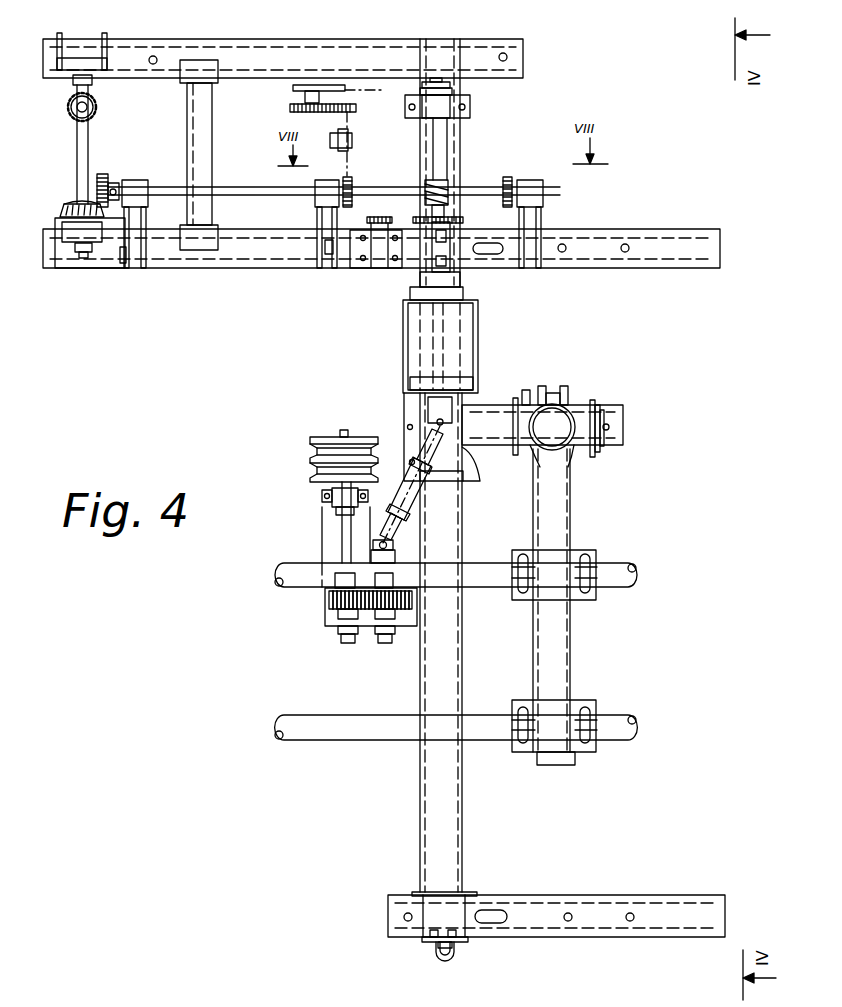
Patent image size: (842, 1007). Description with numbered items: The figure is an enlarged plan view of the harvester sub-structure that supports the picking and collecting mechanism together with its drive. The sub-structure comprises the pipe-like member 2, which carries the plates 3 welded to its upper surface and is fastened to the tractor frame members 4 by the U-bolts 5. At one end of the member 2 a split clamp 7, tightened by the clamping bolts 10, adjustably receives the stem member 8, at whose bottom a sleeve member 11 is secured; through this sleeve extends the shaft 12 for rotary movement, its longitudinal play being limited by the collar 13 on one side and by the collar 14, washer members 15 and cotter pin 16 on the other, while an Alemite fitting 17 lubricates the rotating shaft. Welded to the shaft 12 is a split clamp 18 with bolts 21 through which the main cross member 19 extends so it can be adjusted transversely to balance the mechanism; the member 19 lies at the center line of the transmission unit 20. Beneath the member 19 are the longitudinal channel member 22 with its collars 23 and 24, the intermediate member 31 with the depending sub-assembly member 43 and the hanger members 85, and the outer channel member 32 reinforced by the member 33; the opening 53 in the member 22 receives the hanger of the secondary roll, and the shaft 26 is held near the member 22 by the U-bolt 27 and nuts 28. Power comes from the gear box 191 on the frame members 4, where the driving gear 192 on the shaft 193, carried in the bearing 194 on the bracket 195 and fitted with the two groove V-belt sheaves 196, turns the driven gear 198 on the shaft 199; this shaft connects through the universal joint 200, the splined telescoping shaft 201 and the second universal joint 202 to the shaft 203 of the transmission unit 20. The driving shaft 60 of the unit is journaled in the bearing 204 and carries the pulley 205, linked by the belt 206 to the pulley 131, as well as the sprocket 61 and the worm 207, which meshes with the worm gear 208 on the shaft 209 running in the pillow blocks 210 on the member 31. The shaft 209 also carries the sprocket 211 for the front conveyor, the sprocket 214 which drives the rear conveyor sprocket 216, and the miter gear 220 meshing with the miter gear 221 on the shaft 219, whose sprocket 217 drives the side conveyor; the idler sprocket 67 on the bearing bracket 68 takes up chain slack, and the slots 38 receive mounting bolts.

The member 2 is at (535, 649).
The plates 3 is at (514, 551).
The tractor frame members 4 is at (627, 584).
The U-bolts 5 is at (598, 732).
The split clamp 7 is at (575, 398).
The stem member 8 is at (567, 447).
The clamping bolts 10 is at (570, 393).
The sleeve member 11 is at (597, 401).
The shaft 12 is at (471, 411).
The collar 13 is at (512, 457).
The collar 14 is at (588, 455).
The washer members 15 is at (600, 460).
The cotter pin 16 is at (620, 430).
The Alemite fitting 17 is at (522, 390).
The split clamp 18 is at (463, 468).
The main cross member 19 is at (463, 516).
The transmission unit 20 is at (407, 332).
The bolts 21 is at (406, 426).
The member 22 is at (550, 930).
The collar 23 is at (463, 944).
The collar 24 is at (470, 896).
The shaft 26 is at (444, 962).
The U-bolt 27 is at (428, 942).
The nuts 28 is at (445, 936).
The member 31 is at (590, 229).
The channel member 32 is at (287, 40).
The member 33 is at (206, 132).
The slot 38 is at (490, 246).
The sub-assembly member 43 is at (418, 266).
The opening 53 is at (403, 917).
The shaft 60 is at (440, 147).
The chain sprocket 61 is at (418, 216).
The idler sprocket 67 is at (373, 217).
The bearing bracket 68 is at (376, 262).
The hanger members 85 is at (105, 256).
The pulley 131 is at (300, 90).
The gear box 191 is at (326, 622).
The driving gear 192 is at (331, 600).
The shaft 193 is at (343, 533).
The bearing 194 is at (330, 551).
The bracket 195 is at (326, 506).
The two groove V-belt sheaves 196 is at (326, 440).
The driven gear 198 is at (400, 622).
The shaft 199 is at (368, 643).
The universal joint 200 is at (405, 545).
The splined telescoping shaft 201 is at (397, 517).
The second universal joint 202 is at (454, 481).
The shaft 203 is at (435, 350).
The bearing 204 is at (471, 107).
The pulley 205 is at (455, 85).
The belt 206 is at (366, 91).
The worm 207 is at (425, 185).
The worm gear 208 is at (446, 172).
The shaft 209 is at (229, 188).
The pillow blocks 210 is at (336, 166).
The sprocket 211 is at (509, 177).
The sprocket 214 is at (353, 188).
The sprocket 216 is at (138, 180).
The sprocket 217 is at (70, 112).
The shaft 219 is at (76, 166).
The miter gear 220 is at (99, 176).
The miter gear 221 is at (66, 210).